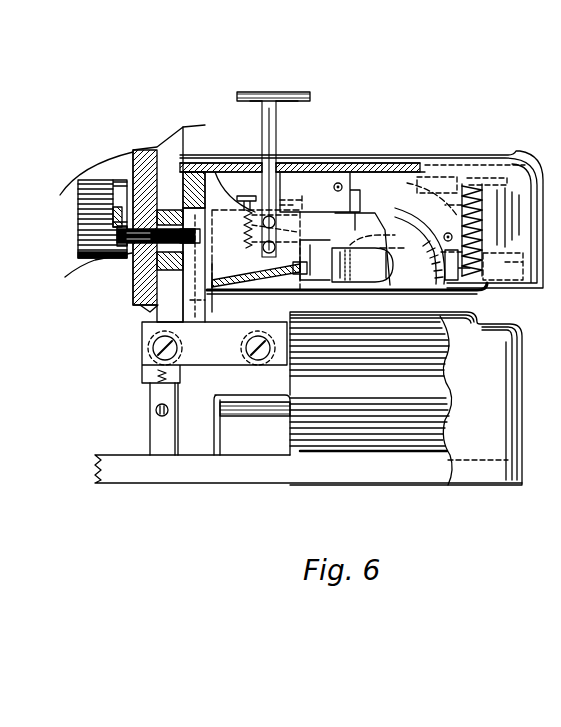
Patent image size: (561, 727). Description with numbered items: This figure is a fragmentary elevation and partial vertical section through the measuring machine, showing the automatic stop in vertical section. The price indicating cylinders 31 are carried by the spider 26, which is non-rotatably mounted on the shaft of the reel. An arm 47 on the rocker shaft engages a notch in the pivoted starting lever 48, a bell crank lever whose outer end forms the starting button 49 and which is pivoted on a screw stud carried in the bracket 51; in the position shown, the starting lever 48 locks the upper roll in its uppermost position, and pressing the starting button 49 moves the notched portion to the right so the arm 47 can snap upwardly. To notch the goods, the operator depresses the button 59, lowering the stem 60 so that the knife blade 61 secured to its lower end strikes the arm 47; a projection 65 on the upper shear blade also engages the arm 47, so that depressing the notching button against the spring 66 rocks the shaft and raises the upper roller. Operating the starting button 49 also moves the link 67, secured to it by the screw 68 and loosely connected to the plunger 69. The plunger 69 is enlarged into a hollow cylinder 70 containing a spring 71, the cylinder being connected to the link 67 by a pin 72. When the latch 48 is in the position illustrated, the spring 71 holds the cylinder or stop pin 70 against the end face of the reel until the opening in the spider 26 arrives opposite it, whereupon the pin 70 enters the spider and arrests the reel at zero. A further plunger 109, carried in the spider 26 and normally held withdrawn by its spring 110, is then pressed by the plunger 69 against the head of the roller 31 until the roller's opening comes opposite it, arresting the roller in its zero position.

The spider 26 is at (130, 284).
The price indicating cylinders 31 is at (80, 255).
The arm 47 is at (282, 290).
The starting lever 48 is at (305, 225).
The starting button 49 is at (388, 240).
The bracket 51 is at (357, 187).
The button 59 is at (255, 95).
The stem 60 is at (262, 121).
The knife blade 61 is at (227, 300).
The projection 65 is at (370, 240).
The spring 66 is at (245, 212).
The link 67 is at (140, 302).
The screw 68 is at (305, 200).
The plunger 69 is at (127, 258).
The hollow cylinder 70 is at (190, 210).
The spring 71 is at (130, 262).
The pin 72 is at (178, 207).
The plunger 109 is at (115, 228).
The spring 110 is at (137, 153).